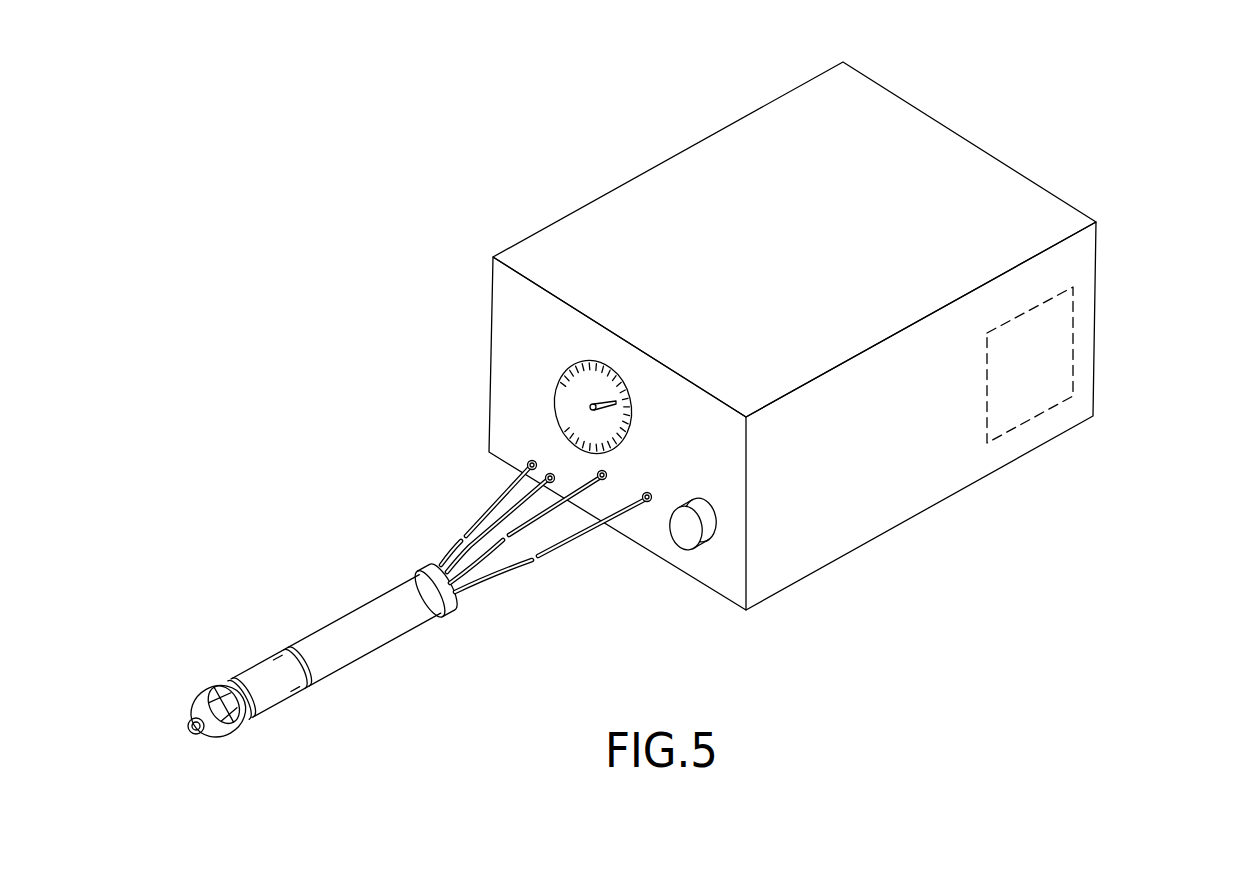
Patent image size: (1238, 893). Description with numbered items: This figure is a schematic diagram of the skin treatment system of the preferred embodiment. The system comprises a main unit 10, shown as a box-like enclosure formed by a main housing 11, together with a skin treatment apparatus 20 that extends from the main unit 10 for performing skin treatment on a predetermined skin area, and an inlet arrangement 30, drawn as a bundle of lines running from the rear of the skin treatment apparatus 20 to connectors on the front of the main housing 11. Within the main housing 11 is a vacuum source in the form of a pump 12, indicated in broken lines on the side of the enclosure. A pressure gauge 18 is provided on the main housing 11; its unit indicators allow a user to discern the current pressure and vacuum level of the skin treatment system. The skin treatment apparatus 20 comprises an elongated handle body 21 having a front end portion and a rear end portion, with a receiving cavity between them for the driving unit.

The main unit 10 is at (1117, 195).
The main housing 11 is at (908, 212).
The pump 12 is at (1037, 349).
The pressure gauge 18 is at (573, 385).
The skin treatment apparatus 20 is at (363, 636).
The handle body 21 is at (377, 647).
The inlet arrangement 30 is at (440, 537).